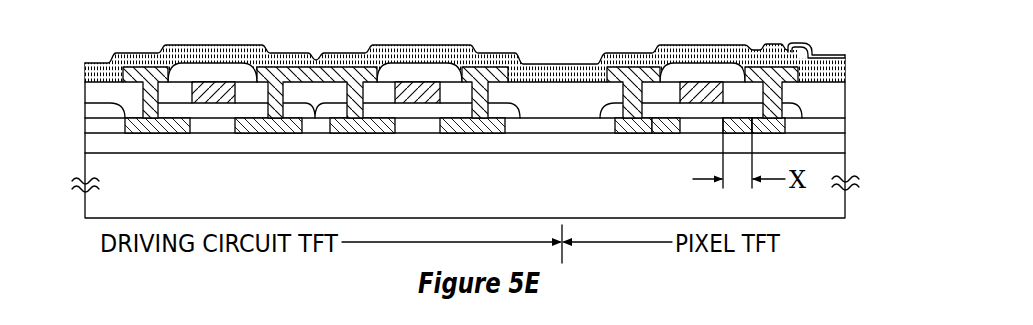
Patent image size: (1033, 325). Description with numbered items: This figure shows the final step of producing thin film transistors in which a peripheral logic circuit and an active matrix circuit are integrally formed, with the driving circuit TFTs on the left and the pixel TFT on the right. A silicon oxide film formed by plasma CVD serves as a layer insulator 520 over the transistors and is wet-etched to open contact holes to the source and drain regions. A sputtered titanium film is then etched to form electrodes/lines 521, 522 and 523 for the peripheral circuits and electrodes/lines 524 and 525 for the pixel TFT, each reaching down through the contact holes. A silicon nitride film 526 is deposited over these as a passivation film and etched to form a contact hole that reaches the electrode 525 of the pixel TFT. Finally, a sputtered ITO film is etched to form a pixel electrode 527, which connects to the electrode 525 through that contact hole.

The layer insulator 520 is at (833, 97).
The electrode/line for peripheral circuit 521 is at (155, 62).
The electrode/line for peripheral circuit 522 is at (365, 53).
The electrode/line for peripheral circuit 523 is at (484, 66).
The electrode/line for pixel TFT 524 is at (643, 53).
The electrode of pixel TFT 525 is at (752, 67).
The silicon nitride film 526 is at (553, 65).
The pixel electrode 527 is at (838, 52).